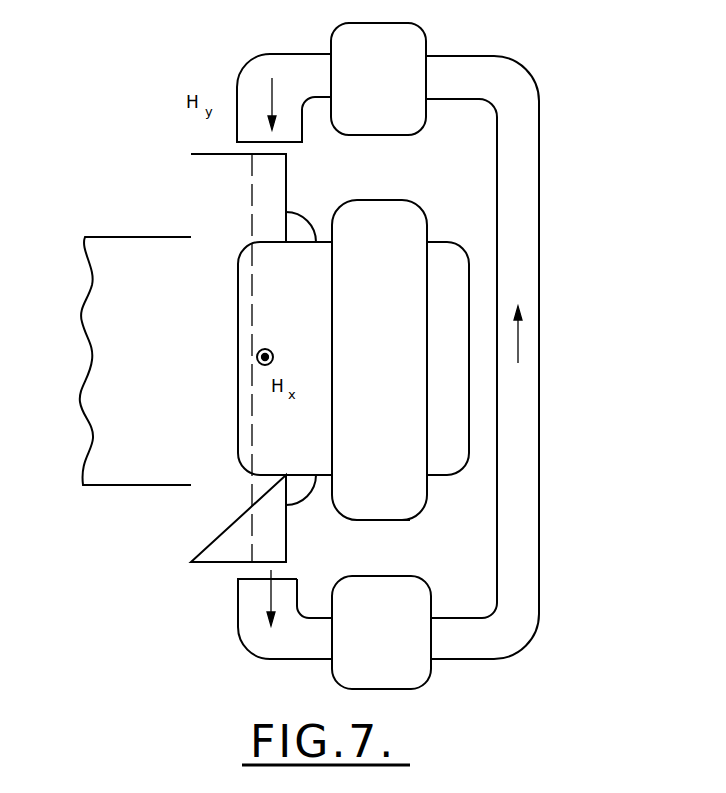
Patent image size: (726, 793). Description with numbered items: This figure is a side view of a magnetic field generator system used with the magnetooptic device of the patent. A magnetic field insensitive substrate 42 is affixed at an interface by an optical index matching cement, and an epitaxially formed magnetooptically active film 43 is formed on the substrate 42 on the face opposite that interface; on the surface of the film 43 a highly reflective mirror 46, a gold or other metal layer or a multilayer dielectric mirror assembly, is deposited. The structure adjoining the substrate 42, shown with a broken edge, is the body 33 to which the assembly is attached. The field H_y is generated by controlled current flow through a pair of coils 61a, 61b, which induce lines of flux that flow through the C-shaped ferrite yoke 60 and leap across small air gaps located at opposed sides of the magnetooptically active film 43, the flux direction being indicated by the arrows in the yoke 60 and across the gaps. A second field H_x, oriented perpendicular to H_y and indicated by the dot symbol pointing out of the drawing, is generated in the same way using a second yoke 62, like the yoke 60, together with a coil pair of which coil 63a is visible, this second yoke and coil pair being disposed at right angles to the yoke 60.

The magnetic body 33 is at (120, 246).
The magnetic field insensitive substrate 42 is at (191, 175).
The magnetooptically active film 43 is at (287, 535).
The highly reflective mirror 46 is at (305, 222).
The C-shaped ferrite yoke 60 is at (532, 257).
The coil 61a is at (426, 38).
The coil 61b is at (431, 675).
The yoke 62 is at (447, 258).
The coil 63a is at (418, 516).